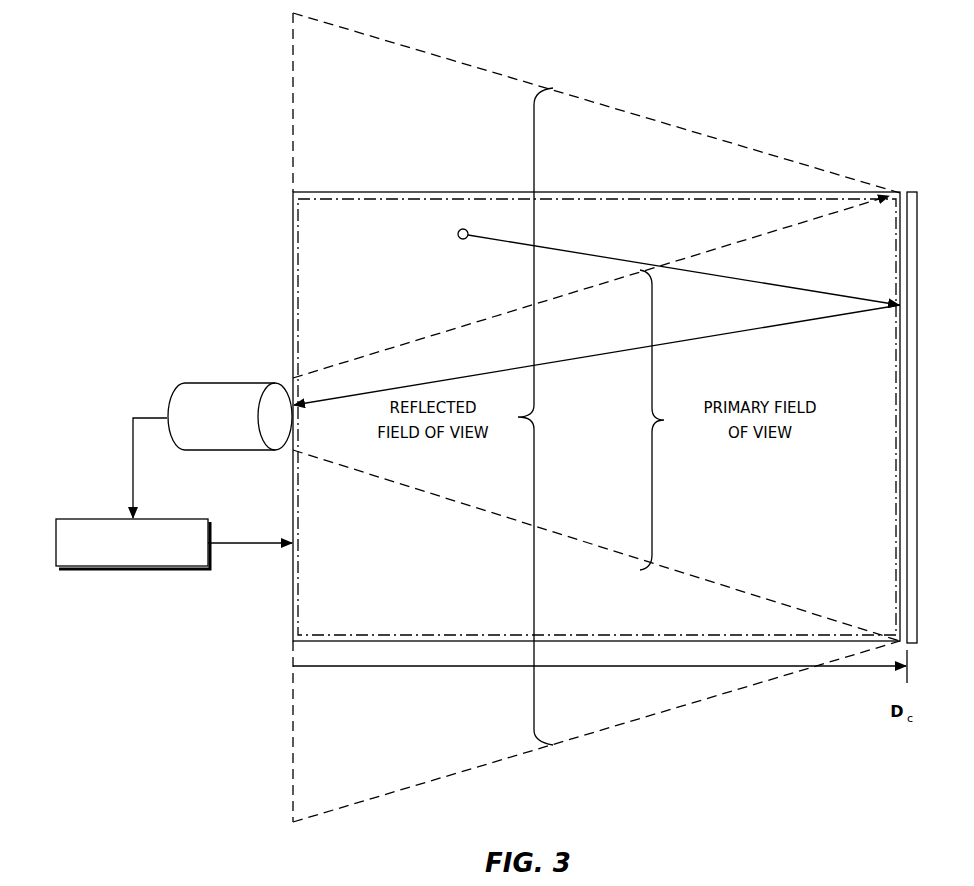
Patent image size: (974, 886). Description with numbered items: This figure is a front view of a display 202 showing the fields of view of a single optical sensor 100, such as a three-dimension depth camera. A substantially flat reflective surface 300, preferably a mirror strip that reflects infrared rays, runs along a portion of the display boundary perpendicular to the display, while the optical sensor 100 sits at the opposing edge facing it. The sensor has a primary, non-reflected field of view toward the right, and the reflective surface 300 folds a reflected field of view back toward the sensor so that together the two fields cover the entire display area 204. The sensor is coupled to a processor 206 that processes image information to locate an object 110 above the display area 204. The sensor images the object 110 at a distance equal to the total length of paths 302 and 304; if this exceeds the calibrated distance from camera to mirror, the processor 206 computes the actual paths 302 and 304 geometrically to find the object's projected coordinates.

The optical sensor 100 is at (200, 383).
The object 110 is at (465, 229).
The display 202 is at (293, 239).
The display area 204 is at (298, 299).
The processor 206 is at (160, 518).
The reflective surface 300 is at (916, 385).
The path 302 is at (770, 281).
The path 304 is at (700, 333).